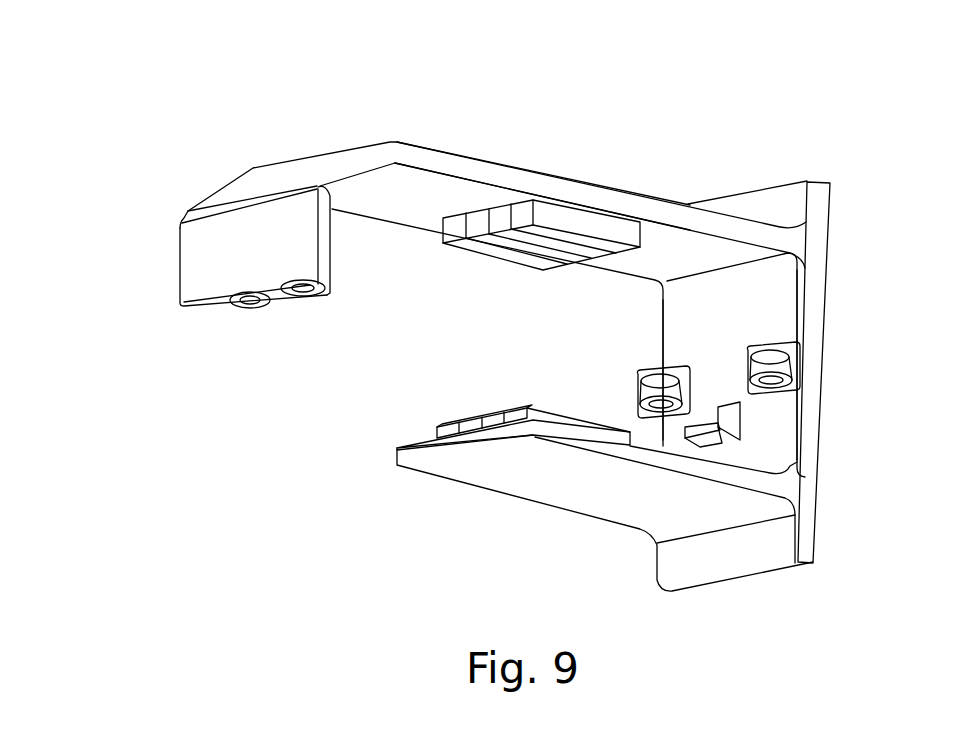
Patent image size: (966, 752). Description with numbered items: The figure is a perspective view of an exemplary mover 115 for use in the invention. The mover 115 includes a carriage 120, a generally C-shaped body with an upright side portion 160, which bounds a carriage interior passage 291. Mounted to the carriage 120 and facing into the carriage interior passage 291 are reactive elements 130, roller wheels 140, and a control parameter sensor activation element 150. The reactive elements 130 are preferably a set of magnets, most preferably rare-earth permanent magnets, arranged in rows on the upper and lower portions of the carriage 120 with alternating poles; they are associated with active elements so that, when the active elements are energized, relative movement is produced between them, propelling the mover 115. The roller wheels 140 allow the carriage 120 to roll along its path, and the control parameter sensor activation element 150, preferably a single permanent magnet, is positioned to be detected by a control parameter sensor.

The mover 115 is at (515, 318).
The carriage 120 is at (560, 190).
The reactive elements 130 is at (510, 248).
The roller wheels 140 is at (640, 378).
The control parameter sensor activation element 150 is at (712, 446).
The side post 160 is at (812, 341).
The carriage interior passage 291 is at (606, 300).